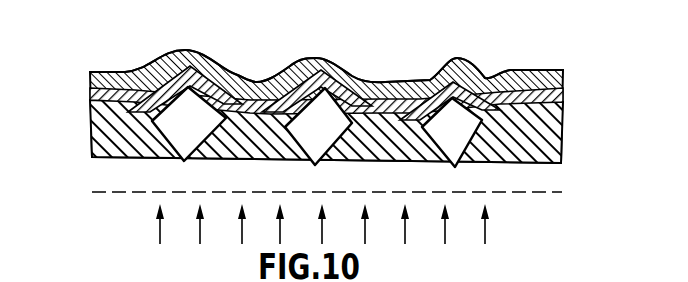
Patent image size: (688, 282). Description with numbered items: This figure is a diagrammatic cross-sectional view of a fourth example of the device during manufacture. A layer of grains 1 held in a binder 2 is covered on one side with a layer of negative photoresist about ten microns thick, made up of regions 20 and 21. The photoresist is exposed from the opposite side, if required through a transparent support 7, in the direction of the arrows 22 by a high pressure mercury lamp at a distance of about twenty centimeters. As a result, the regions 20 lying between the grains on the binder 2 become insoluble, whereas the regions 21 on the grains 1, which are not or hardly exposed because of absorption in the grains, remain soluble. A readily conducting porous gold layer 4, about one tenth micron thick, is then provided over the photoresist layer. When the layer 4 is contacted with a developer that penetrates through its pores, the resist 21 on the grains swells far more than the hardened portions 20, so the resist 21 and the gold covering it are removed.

The grains 1 is at (155, 120).
The binder 2 is at (245, 86).
The porous gold layer 4 is at (140, 70).
The transparent support 7 is at (550, 183).
The hardened photoresist regions 20 is at (397, 105).
The soluble photoresist regions 21 is at (90, 98).
The arrows 22 is at (158, 227).